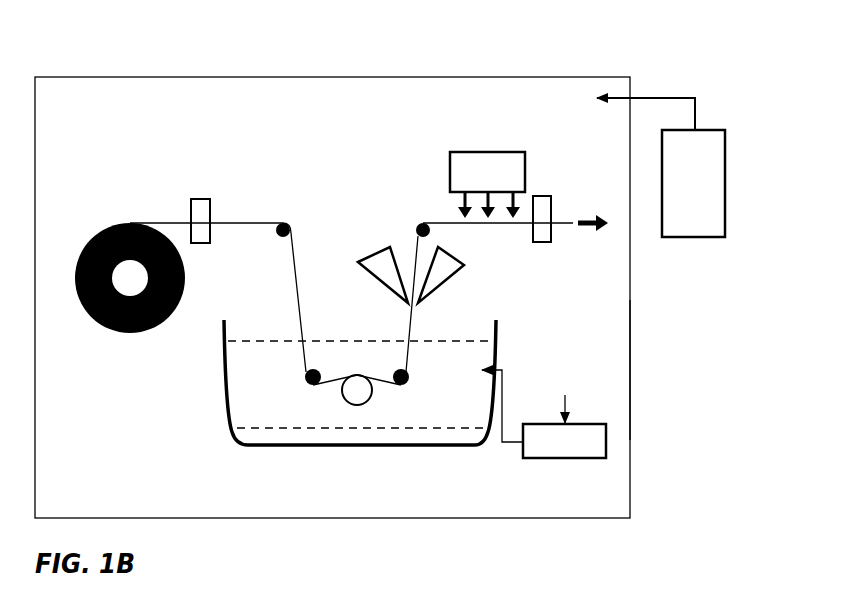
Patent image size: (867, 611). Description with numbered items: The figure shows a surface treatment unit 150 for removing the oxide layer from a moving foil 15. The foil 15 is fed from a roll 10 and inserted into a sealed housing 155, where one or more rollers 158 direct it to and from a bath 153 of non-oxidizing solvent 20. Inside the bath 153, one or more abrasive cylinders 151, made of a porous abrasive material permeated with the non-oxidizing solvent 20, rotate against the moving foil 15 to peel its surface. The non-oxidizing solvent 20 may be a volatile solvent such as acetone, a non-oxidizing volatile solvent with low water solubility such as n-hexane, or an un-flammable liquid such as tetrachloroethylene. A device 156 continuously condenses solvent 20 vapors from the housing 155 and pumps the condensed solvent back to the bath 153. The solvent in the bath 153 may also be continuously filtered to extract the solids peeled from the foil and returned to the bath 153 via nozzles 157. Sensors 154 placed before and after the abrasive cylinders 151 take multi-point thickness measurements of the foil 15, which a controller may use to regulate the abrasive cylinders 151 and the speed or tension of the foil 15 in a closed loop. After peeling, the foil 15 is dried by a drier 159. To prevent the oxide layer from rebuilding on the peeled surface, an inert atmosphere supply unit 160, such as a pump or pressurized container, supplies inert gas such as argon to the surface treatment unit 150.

The surface treatment unit 150 is at (208, 50).
The roll 10 is at (107, 333).
The foil 15 is at (246, 220).
The sensors 154 is at (186, 198).
The rollers 158 is at (292, 214).
The abrasive cylinders 151 is at (378, 395).
The drier 159 is at (471, 168).
The nozzles 157 is at (440, 270).
The inert atmosphere supply unit 160 is at (707, 178).
The sealed housing 155 is at (633, 370).
The device 156 is at (592, 462).
The bath 153 is at (229, 410).
The non-oxidizing solvent 20 is at (248, 366).